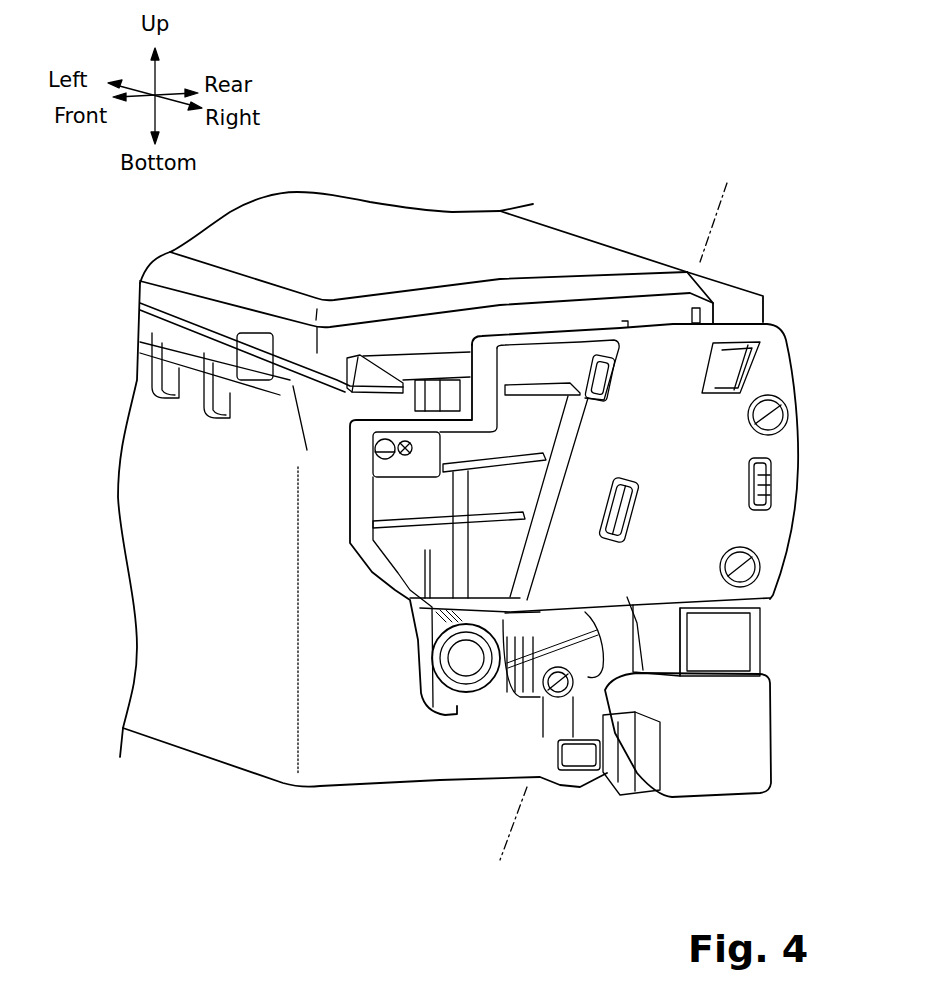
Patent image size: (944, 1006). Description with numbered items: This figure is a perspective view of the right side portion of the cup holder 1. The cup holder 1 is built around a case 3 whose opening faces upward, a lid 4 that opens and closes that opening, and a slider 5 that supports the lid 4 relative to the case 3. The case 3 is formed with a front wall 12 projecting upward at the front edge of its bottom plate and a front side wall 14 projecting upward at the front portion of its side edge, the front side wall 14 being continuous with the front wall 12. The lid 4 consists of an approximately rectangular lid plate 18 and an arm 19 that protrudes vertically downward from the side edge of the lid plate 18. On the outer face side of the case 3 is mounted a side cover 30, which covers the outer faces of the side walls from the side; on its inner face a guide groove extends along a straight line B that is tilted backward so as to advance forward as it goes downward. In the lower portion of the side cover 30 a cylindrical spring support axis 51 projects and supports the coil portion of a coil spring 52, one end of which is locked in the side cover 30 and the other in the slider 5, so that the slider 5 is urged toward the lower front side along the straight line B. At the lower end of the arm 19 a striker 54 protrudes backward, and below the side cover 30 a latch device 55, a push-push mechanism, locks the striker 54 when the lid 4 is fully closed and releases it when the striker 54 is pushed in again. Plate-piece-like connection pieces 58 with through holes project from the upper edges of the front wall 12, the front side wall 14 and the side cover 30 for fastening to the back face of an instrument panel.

The cup holder 1 is at (609, 186).
The case 3 is at (190, 756).
The lid 4 is at (381, 238).
The slider 5 is at (640, 630).
The front wall 12 is at (155, 637).
The front side wall 14 is at (367, 760).
The lid plate 18 is at (309, 218).
The arm 19 is at (513, 705).
The side cover 30 is at (770, 378).
The spring support axis 51 is at (466, 690).
The coil spring 52 is at (478, 692).
The striker 54 is at (582, 758).
The latch device 55 is at (700, 780).
The connection piece 58 is at (360, 383).
The straight line B is at (615, 509).